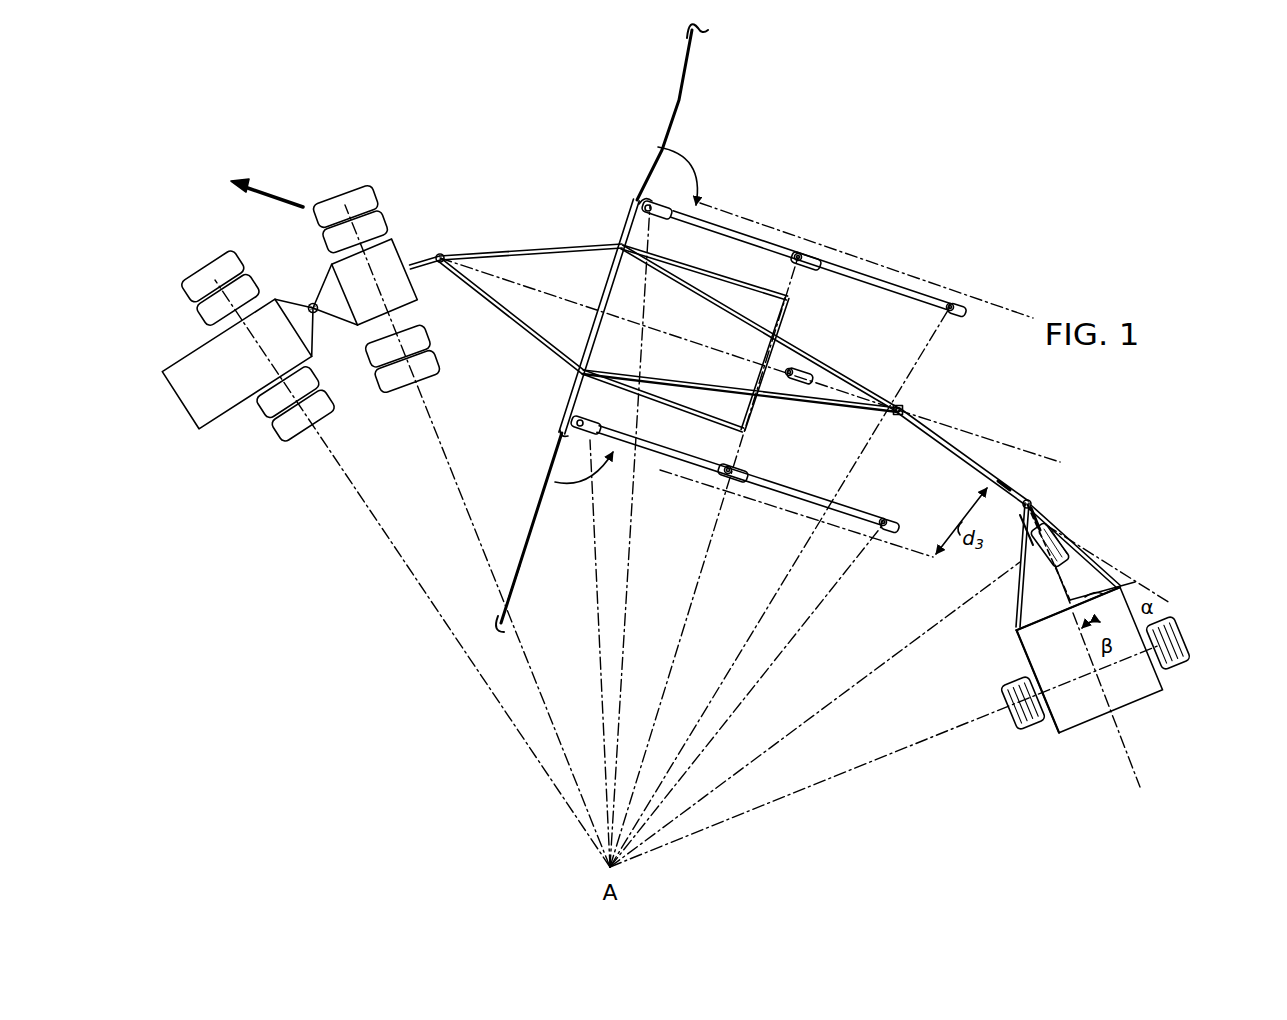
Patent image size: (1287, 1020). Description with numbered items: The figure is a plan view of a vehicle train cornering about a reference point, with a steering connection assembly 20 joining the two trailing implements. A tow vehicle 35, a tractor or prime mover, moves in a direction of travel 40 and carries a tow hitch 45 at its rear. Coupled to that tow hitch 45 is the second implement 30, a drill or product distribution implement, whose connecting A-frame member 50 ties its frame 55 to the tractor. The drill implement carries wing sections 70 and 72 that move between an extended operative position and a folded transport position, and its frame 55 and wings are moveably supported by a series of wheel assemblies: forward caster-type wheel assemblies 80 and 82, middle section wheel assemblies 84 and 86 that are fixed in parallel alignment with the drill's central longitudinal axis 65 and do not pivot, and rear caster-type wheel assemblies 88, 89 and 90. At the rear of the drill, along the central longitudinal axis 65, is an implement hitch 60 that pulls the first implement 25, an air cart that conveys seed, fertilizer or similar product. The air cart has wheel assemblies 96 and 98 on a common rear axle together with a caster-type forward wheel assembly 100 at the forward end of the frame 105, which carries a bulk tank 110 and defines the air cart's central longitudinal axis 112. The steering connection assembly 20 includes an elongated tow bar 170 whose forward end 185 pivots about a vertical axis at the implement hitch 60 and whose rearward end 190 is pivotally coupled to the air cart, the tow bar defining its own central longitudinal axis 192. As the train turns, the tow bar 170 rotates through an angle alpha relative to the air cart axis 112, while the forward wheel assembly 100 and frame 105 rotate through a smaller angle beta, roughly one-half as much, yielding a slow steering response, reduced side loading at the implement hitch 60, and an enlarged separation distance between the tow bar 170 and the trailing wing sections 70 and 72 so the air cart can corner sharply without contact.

The steering connection assembly 20 is at (1010, 518).
The first implement 25 is at (1102, 531).
The second implement 30 is at (550, 388).
The tow vehicle 35 is at (222, 445).
The direction of travel 40 is at (277, 193).
The tow hitch 45 is at (433, 250).
The connecting A-frame member 50 is at (514, 246).
The frame 55 is at (627, 222).
The implement hitch 60 is at (900, 398).
The central longitudinal axis 65 is at (528, 292).
The wing section 70 is at (676, 104).
The wing section 72 is at (521, 563).
The forward wheel assembly 80 is at (666, 226).
The forward wheel assembly 82 is at (594, 405).
The middle section wheel assembly 84 is at (815, 250).
The middle section wheel assembly 86 is at (757, 461).
The rear wheel assembly 88 is at (970, 297).
The rear wheel assembly 89 is at (801, 364).
The rear wheel assembly 90 is at (900, 510).
The wheel assembly 96 is at (998, 687).
The wheel assembly 98 is at (1184, 618).
The forward wheel assembly 100 is at (1038, 572).
The frame 105 is at (1018, 628).
The bulk tank 110 is at (1140, 703).
The central longitudinal axis 112 is at (1133, 770).
The elongated tow bar 170 is at (965, 440).
The forward end 185 is at (899, 424).
The rearward end 190 is at (1036, 493).
The central longitudinal axis 192 is at (1118, 573).